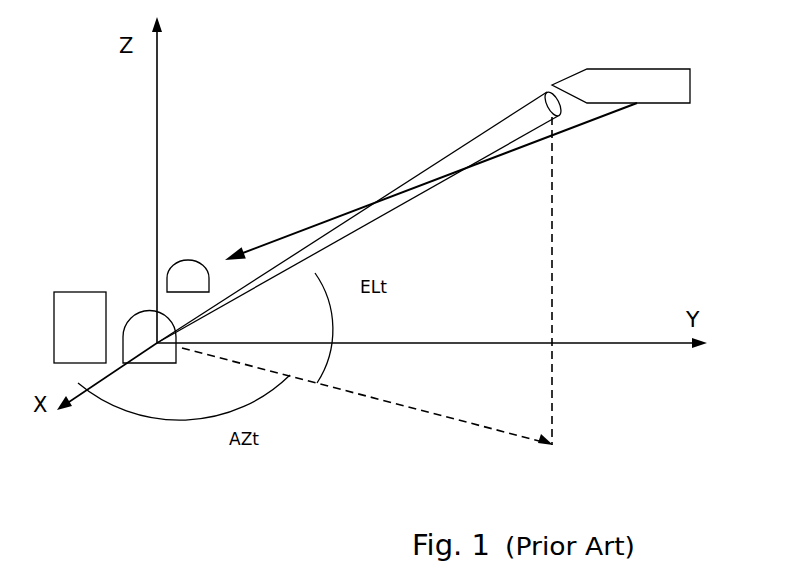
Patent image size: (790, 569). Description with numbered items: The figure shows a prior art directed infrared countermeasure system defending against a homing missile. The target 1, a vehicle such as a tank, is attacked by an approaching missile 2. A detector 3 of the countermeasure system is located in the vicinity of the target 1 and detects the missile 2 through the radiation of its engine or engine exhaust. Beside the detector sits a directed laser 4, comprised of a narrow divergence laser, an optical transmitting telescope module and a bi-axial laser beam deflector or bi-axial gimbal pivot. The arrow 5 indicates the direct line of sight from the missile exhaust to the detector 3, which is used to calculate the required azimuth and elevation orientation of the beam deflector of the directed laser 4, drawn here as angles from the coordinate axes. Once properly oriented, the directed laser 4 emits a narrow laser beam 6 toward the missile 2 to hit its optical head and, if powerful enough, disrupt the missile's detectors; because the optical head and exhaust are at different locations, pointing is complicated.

The target 1 is at (60, 292).
The missile 2 is at (603, 87).
The detector 3 is at (192, 274).
The directed laser 4 is at (140, 312).
The arrow 5 is at (277, 240).
The narrow laser beam 6 is at (467, 155).